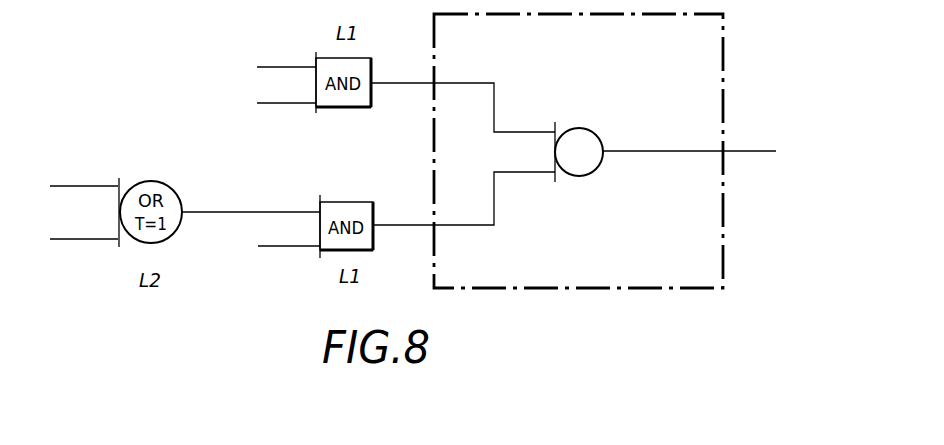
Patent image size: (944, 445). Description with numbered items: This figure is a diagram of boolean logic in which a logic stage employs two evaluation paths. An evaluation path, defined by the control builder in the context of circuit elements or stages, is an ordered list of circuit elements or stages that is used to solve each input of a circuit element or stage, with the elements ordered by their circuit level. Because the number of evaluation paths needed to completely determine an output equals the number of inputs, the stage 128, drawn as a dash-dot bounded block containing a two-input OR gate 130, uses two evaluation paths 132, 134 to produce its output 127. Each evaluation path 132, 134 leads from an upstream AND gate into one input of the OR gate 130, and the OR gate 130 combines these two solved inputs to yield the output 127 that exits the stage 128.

The output 127 is at (643, 152).
The stage 128 is at (724, 263).
The two-input OR gate 130 is at (582, 129).
The evaluation path 132 is at (462, 83).
The evaluation path 134 is at (465, 226).